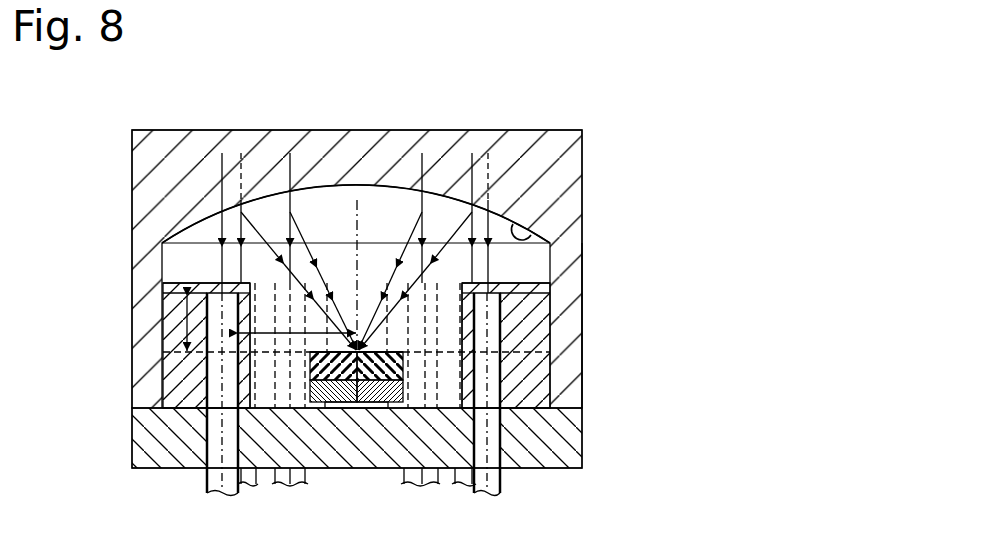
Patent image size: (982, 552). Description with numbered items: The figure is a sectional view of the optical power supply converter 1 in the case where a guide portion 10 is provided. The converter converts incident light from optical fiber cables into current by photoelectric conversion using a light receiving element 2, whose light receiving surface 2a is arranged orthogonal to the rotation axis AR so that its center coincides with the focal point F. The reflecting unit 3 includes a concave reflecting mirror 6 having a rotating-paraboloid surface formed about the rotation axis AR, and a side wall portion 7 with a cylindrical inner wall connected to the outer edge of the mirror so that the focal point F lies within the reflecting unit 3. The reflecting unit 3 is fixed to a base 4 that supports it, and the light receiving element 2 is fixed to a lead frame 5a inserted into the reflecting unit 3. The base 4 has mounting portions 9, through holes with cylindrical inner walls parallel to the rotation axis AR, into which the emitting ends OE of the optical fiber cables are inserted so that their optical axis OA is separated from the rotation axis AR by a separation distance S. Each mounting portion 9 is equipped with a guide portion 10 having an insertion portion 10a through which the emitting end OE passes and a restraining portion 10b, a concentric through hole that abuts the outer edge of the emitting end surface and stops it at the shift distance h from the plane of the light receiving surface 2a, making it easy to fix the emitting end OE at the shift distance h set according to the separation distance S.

The optical power supply converter 1 is at (94, 124).
The light receiving element 2 is at (312, 363).
The light receiving surface 2a is at (370, 350).
The reflecting unit 3 is at (180, 130).
The base 4 is at (133, 440).
The lead frame 5a is at (372, 398).
The concave reflecting mirror 6 is at (535, 232).
The side wall portion 7 is at (583, 347).
The mounting portion 9 is at (215, 476).
The guide portion 10 is at (162, 282).
The insertion portion 10a is at (224, 370).
The restraining portion 10b is at (212, 284).
The rotation axis AR is at (356, 199).
The separation distance S is at (274, 335).
The focal point F is at (361, 351).
The shift distance h is at (183, 323).
The optical axis OA is at (205, 421).
The emitting end OE is at (218, 478).